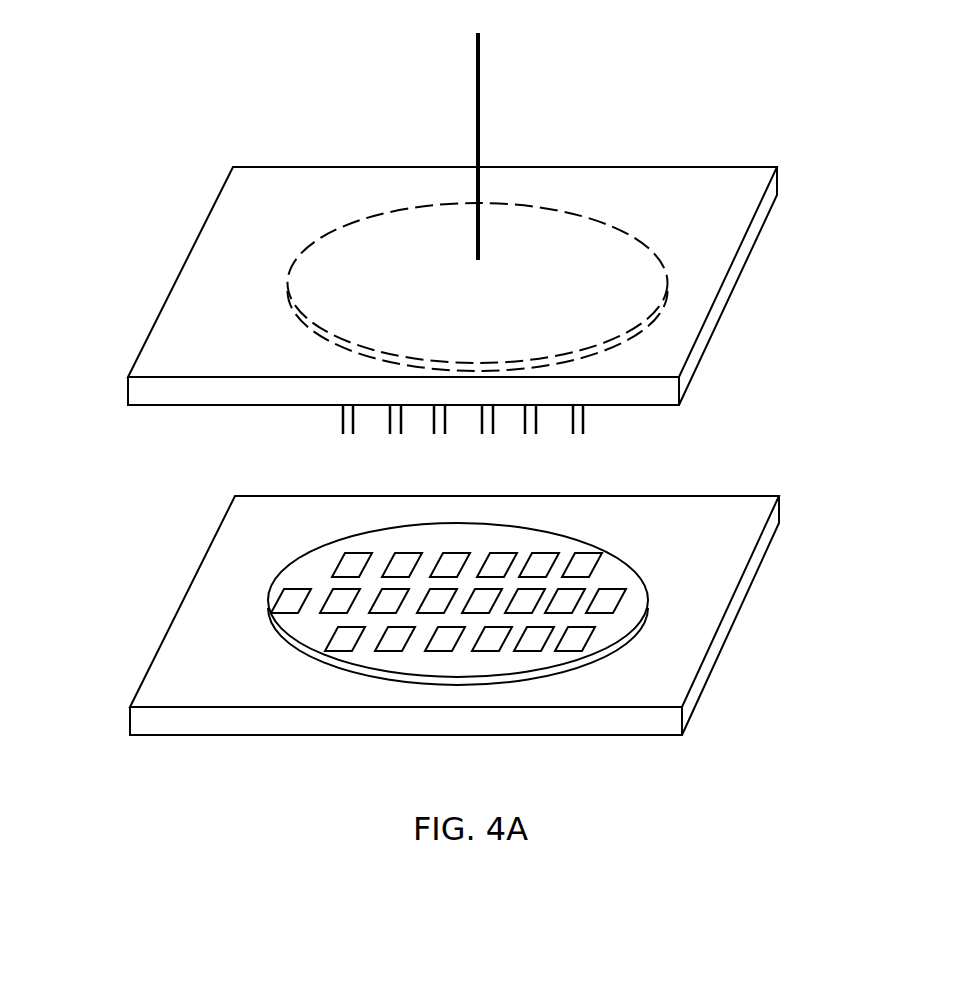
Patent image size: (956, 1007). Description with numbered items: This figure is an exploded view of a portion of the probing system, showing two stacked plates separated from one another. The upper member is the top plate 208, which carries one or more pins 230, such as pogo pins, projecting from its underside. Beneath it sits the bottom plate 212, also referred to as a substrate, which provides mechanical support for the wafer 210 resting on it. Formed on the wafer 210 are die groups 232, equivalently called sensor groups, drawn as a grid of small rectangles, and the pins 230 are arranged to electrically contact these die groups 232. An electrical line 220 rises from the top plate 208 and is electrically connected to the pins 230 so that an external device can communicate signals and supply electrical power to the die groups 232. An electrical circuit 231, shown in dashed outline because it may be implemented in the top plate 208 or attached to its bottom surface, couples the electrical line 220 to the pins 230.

The top plate 208 is at (210, 212).
The electrical line 220 is at (480, 75).
The electrical circuit 231 is at (636, 240).
The pins 230 is at (582, 422).
The bottom plate 212 is at (175, 616).
The wafer 210 is at (630, 636).
The die groups 232 is at (358, 551).